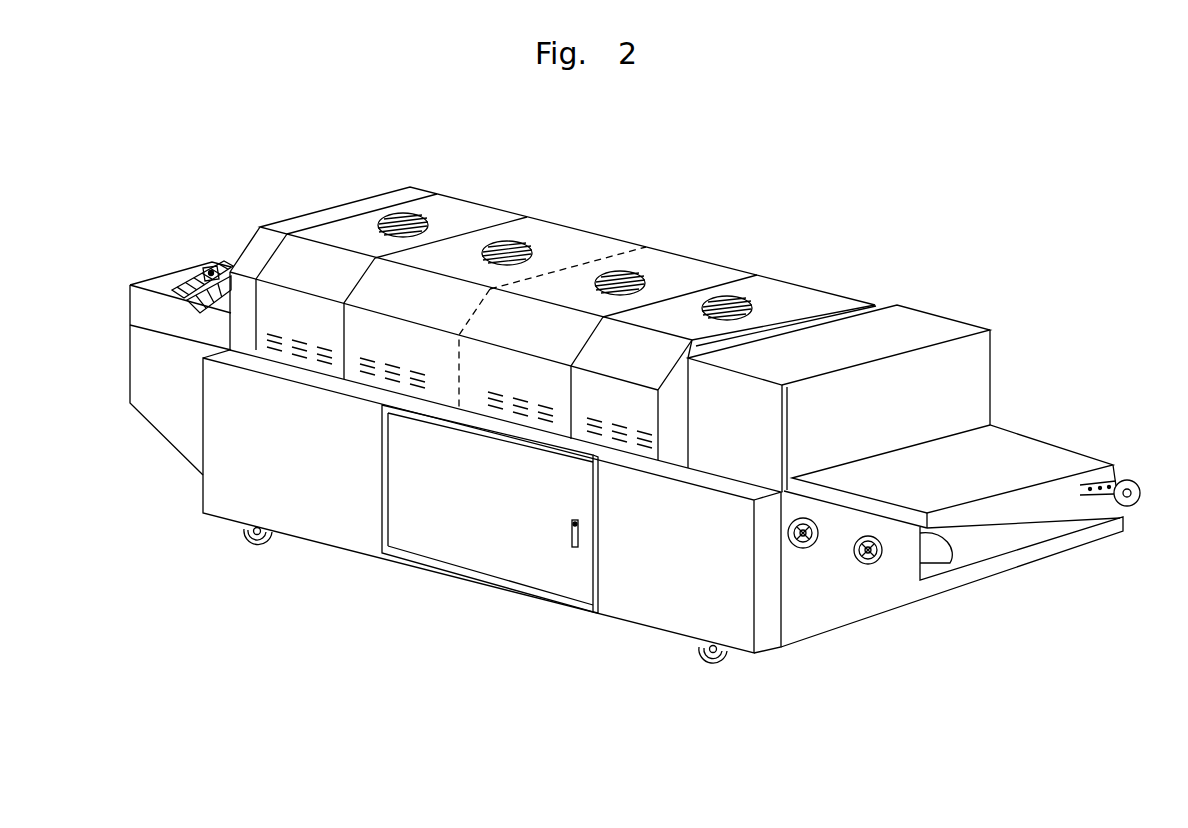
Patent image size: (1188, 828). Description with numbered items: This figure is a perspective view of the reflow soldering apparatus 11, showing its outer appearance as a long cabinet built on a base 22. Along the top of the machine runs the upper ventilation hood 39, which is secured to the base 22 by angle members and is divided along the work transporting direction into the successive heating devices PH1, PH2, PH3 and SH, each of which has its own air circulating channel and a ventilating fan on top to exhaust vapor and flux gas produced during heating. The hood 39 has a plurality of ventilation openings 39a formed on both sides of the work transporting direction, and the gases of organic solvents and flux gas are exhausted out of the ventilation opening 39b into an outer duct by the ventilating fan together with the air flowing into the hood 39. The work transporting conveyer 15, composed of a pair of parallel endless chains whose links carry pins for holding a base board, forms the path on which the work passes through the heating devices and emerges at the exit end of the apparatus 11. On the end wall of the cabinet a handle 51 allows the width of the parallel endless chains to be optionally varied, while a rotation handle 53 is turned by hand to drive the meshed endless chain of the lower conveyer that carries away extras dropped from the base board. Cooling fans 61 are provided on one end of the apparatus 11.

The reflow soldering apparatus 11 is at (342, 198).
The work transporting conveyer 15 is at (1117, 487).
The base 22 is at (643, 628).
The upper ventilation hood 39 is at (550, 218).
The ventilation openings 39a is at (277, 350).
The ventilation opening 39b is at (737, 303).
The handle 51 is at (862, 568).
The rotation handle 53 is at (795, 552).
The cooling fans 61 is at (213, 268).
The heating device SH is at (474, 205).
The heating device PH1 is at (797, 285).
The heating device PH2 is at (687, 257).
The heating device PH3 is at (593, 233).